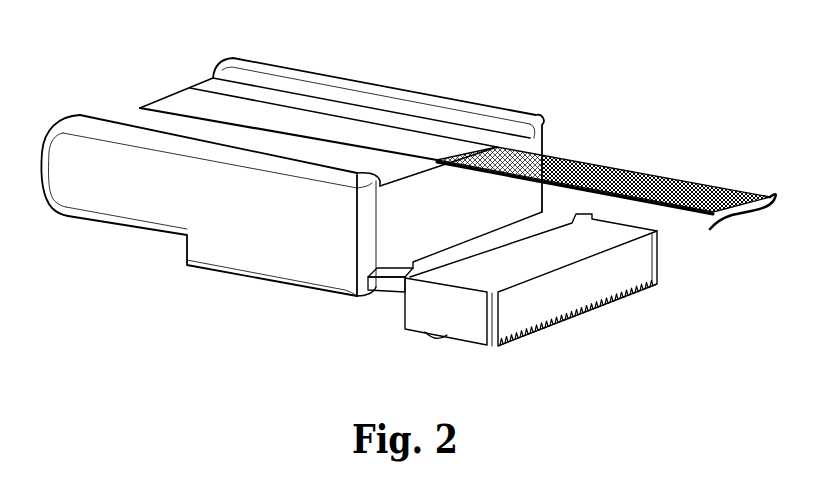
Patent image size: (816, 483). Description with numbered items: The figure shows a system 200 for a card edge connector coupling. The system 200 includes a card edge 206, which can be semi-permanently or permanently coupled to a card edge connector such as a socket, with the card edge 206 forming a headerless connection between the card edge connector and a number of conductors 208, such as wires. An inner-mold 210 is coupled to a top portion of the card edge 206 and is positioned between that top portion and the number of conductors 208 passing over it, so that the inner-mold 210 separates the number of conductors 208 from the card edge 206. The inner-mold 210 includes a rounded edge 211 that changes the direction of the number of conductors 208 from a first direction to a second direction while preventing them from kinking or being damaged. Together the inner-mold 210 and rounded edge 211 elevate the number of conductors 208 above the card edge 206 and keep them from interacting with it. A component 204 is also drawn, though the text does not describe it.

The system 200 is at (553, 72).
The connector 204 is at (460, 327).
The card edge 206 is at (392, 292).
The number of conductors 208 is at (608, 173).
The inner-mold 210 is at (262, 260).
The rounded edge 211 is at (43, 175).